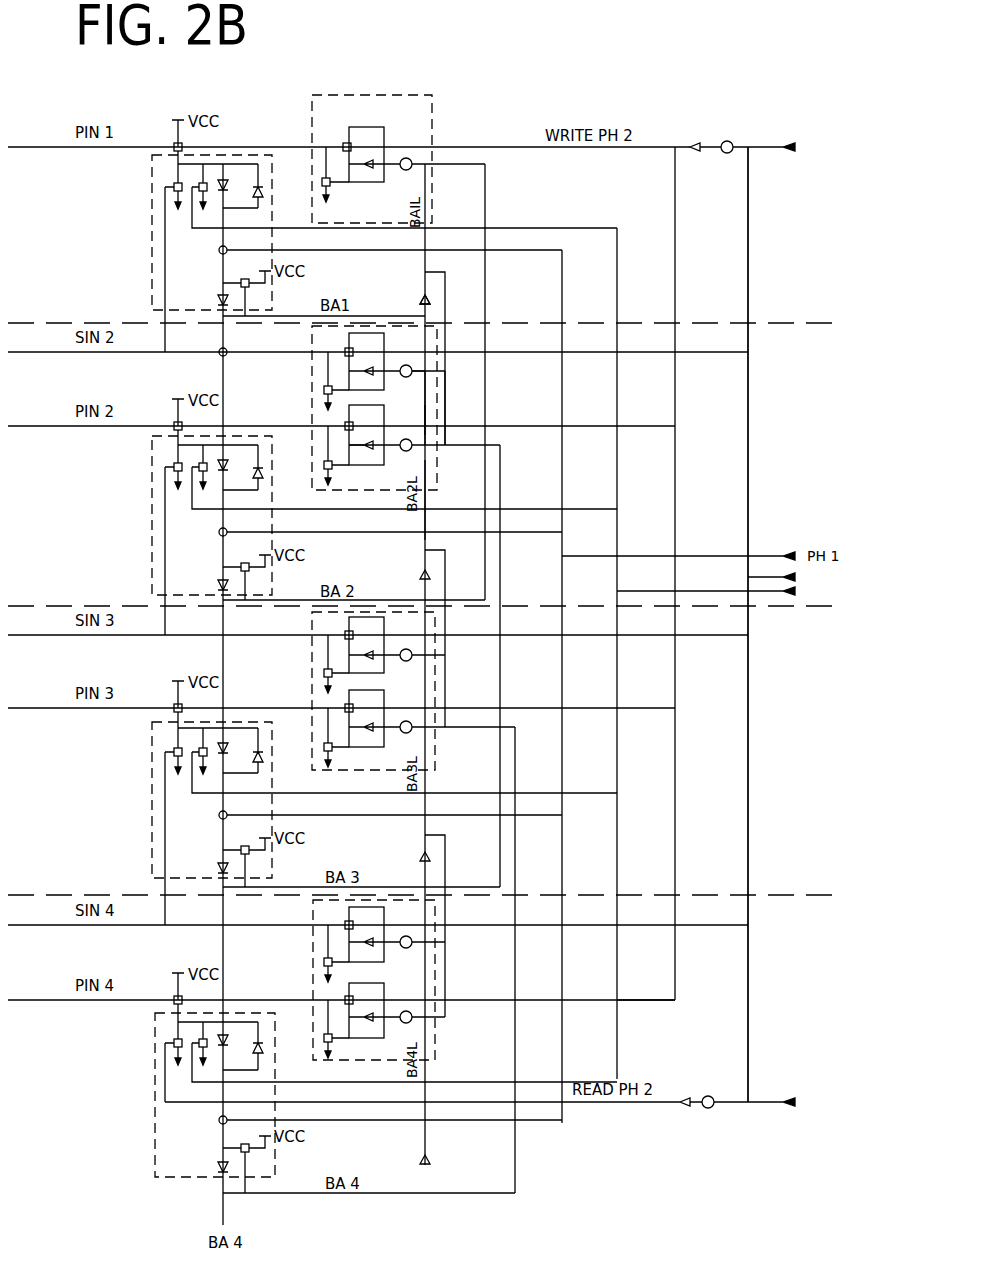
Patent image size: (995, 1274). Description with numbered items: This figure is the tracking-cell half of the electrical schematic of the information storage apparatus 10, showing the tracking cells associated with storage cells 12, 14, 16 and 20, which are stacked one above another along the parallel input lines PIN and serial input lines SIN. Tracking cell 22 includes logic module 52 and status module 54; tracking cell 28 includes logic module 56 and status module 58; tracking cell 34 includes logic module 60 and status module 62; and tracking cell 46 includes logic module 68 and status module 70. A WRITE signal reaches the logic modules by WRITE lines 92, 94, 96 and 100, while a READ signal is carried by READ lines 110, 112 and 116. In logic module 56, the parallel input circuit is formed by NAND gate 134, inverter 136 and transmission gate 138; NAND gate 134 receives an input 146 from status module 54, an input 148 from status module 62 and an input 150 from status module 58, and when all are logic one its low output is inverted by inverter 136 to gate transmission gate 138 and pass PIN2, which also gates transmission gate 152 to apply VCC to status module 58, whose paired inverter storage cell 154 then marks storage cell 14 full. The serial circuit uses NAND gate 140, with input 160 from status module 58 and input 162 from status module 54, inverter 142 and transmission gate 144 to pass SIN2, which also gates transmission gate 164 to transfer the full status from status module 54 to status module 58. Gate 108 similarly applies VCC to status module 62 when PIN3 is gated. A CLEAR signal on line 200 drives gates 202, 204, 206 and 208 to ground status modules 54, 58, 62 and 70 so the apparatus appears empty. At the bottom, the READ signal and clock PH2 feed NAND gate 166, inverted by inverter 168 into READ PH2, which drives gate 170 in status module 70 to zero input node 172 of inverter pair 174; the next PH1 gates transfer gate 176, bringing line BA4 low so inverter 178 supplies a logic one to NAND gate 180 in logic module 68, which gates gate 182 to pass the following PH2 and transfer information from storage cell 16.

The apparatus 10 is at (48, 108).
The storage cell 12 is at (70, 199).
The storage cell 14 is at (67, 497).
The storage cell 16 is at (67, 760).
The storage cell 20 is at (67, 1063).
The tracking cell 22 is at (452, 119).
The tracking cell 28 is at (359, 300).
The tracking cell 34 is at (487, 672).
The tracking cell 46 is at (466, 936).
The logic module 52 is at (370, 80).
The status module 54 is at (152, 163).
The logic module 56 is at (322, 401).
The status module 58 is at (163, 453).
The logic module 60 is at (316, 668).
The status module 62 is at (163, 754).
The logic module 68 is at (432, 1051).
The status module 70 is at (170, 1160).
The WRITE line 92 is at (660, 148).
The WRITE line 94 is at (619, 428).
The WRITE line 96 is at (619, 710).
The WRITE line 100 is at (646, 1002).
The gate 108 is at (176, 706).
The READ line 110 is at (736, 358).
The READ line 112 is at (736, 643).
The READ line 116 is at (736, 940).
The NAND gate 134 is at (425, 422).
The inverter 136 is at (366, 452).
The transmission gate 138 is at (326, 438).
The NAND gate 140 is at (420, 322).
The inverter 142 is at (345, 372).
The transmission gate 144 is at (338, 338).
The input 146 is at (446, 421).
The input 148 is at (502, 492).
The input 150 is at (428, 498).
The transmission gate 152 is at (176, 424).
The paired inverter storage cell 154 is at (240, 478).
The input 160 is at (440, 401).
The input 162 is at (426, 348).
The transmission gate 164 is at (215, 338).
The NAND gate 166 is at (708, 1112).
The inverter 168 is at (680, 1108).
The gate 170 is at (174, 1053).
The input node 172 is at (170, 1021).
The inverter pair 174 is at (247, 1036).
The transfer gate 176 is at (220, 1121).
The inverter 178 is at (438, 1163).
The NAND gate 180 is at (418, 937).
The gate 182 is at (349, 922).
The line 200 is at (713, 590).
The gate 202 is at (190, 229).
The gate 204 is at (190, 494).
The gate 206 is at (190, 793).
The gate 208 is at (190, 1083).